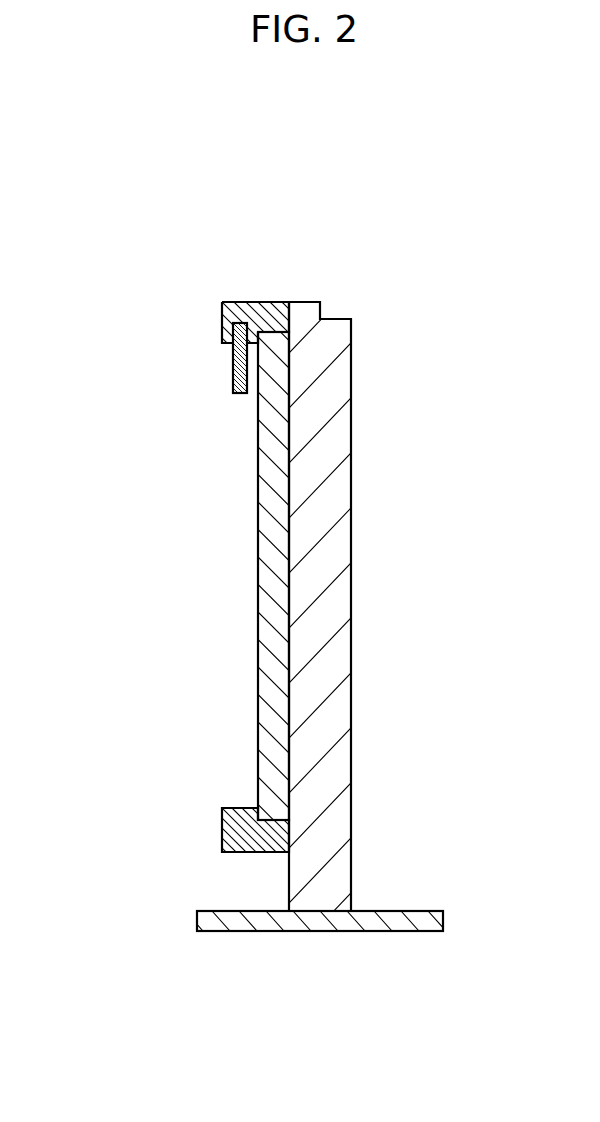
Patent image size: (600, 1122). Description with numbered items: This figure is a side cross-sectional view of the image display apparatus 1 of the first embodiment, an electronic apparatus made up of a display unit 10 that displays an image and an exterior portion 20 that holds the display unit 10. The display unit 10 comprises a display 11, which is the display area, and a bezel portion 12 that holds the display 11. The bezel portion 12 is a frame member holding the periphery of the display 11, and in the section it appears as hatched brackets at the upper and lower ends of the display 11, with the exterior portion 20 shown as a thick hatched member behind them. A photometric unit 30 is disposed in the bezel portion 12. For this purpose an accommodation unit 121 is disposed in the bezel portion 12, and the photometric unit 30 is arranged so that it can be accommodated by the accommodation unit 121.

The image display apparatus 1 is at (338, 212).
The display unit 10 is at (258, 280).
The display 11 is at (268, 662).
The bezel portion 12 is at (222, 301).
The accommodation unit 121 is at (232, 352).
The exterior portion 20 is at (330, 550).
The photometric unit 30 is at (233, 370).